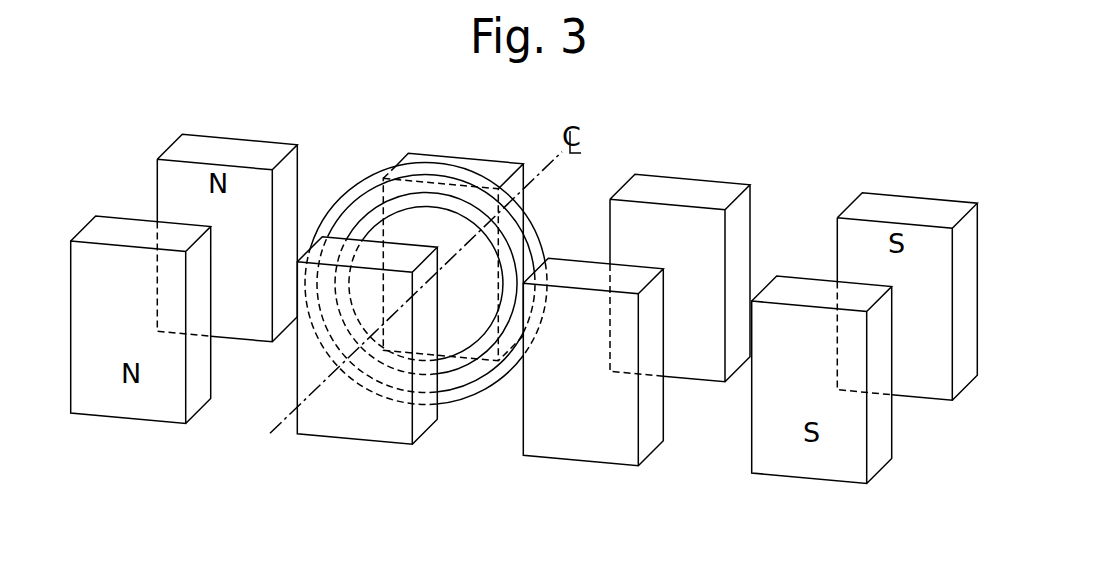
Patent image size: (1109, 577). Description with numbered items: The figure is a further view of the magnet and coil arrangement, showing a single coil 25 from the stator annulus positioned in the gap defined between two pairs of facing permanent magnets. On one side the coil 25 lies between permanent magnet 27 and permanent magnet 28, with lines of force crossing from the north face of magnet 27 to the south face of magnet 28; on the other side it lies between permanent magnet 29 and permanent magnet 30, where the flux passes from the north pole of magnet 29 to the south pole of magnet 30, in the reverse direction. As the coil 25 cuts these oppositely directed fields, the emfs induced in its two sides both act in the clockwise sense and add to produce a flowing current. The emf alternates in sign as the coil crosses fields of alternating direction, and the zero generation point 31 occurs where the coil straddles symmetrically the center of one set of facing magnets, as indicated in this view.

The coil 25 is at (356, 181).
The permanent magnet 27 is at (490, 168).
The permanent magnet 28 is at (340, 428).
The permanent magnet 29 is at (605, 447).
The permanent magnet 30 is at (705, 195).
The zero generation point 31 is at (463, 422).